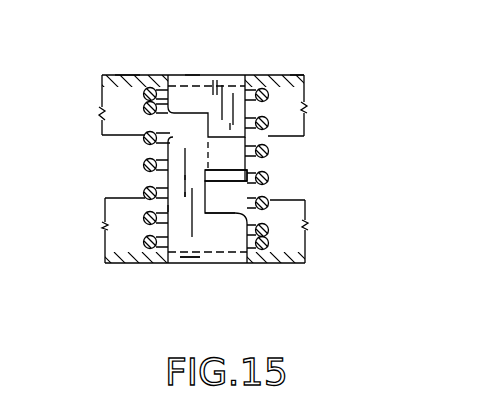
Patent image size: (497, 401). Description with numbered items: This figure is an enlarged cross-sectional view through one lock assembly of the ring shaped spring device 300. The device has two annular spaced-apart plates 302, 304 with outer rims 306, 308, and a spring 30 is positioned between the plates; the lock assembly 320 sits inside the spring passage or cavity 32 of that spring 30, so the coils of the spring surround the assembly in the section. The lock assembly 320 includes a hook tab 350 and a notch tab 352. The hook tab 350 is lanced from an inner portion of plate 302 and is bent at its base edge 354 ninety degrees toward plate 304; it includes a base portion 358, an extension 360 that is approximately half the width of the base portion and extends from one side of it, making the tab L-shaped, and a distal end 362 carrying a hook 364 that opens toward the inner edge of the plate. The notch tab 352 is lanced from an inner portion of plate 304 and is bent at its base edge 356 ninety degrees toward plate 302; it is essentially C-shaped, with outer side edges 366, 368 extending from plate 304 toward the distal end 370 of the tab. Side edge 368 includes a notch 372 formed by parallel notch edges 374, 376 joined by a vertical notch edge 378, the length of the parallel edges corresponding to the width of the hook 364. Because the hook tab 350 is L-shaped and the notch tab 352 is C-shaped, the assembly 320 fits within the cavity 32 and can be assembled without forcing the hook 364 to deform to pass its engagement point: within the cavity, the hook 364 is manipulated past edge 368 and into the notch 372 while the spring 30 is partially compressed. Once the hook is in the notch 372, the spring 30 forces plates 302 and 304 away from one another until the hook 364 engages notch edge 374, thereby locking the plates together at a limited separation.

The ring shaped spring device 300 is at (147, 67).
The plate 302 is at (260, 75).
The plate 304 is at (283, 258).
The outer rim 306 is at (298, 100).
The outer rim 308 is at (280, 236).
The spring 30 is at (268, 151).
The spring passage (cavity) 32 is at (163, 120).
The lock assembly 320 is at (113, 268).
The hook tab 350 is at (304, 77).
The notch tab 352 is at (168, 185).
The base edge 354 is at (187, 95).
The base edge 356 is at (184, 262).
The base portion 358 is at (190, 82).
The extension 360 is at (235, 186).
The distal end 362 is at (187, 197).
The hook 364 is at (250, 174).
The outer side edge 366 is at (128, 243).
The outer side edge 368 is at (255, 140).
The distal end 370 is at (128, 80).
The notch 372 is at (175, 208).
The notch edge 374 is at (190, 178).
The notch edge 376 is at (232, 212).
The vertical notch edge 378 is at (215, 220).